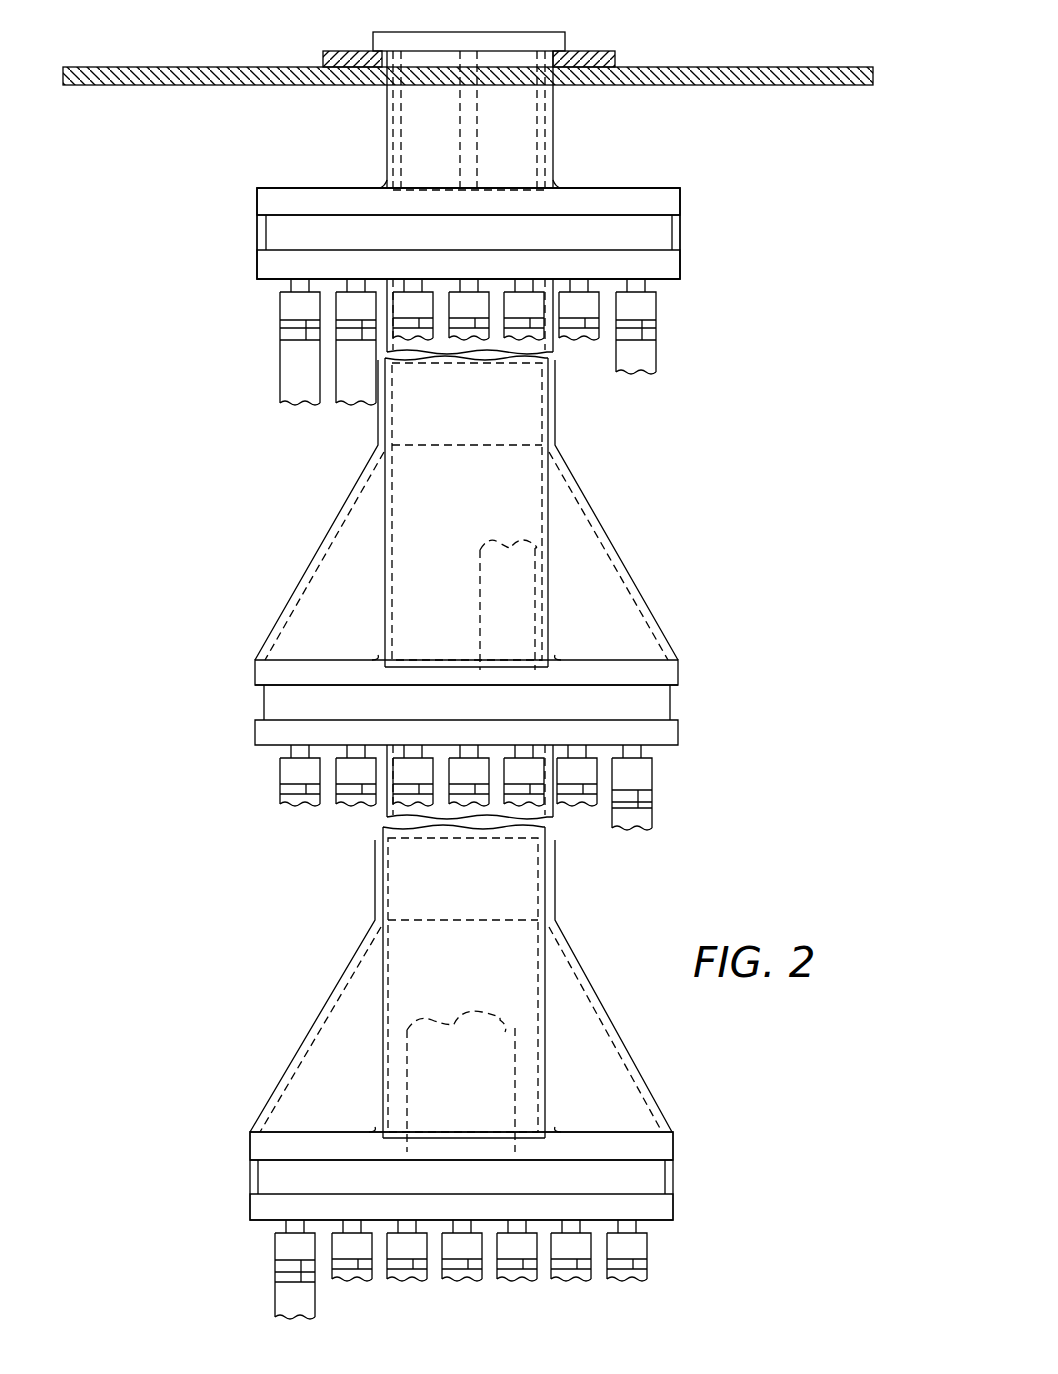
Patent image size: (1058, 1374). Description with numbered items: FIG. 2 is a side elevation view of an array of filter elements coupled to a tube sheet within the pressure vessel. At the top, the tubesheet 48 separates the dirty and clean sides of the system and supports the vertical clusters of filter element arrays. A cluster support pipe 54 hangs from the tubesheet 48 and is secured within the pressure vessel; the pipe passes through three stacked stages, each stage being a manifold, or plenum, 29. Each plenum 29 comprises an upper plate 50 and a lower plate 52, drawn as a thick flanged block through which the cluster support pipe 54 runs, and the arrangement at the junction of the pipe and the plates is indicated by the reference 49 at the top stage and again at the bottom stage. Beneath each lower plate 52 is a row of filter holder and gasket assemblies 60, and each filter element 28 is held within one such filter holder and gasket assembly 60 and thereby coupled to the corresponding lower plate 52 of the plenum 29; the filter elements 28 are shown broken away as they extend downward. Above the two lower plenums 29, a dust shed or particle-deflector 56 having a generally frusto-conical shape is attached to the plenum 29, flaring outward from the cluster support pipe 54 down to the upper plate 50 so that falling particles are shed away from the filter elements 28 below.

The tubesheet 48 is at (667, 67).
The cluster support pipe 54 is at (552, 128).
The flange connection 49 is at (680, 189).
The manifold 29 is at (730, 240).
The upper plate 50 is at (262, 206).
The lower plate 52 is at (262, 268).
The filter holder and gasket assembly 60 is at (282, 306).
The filter element 28 is at (286, 368).
The particle-deflector 56 is at (318, 544).